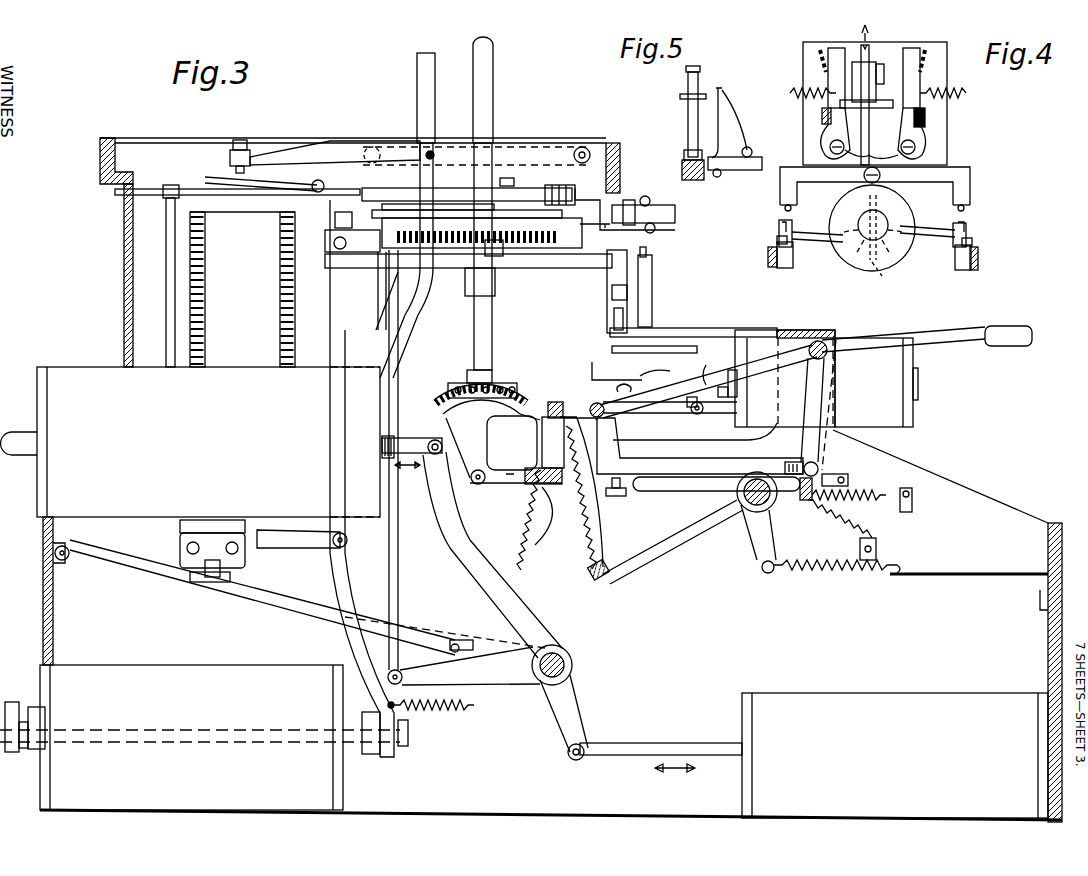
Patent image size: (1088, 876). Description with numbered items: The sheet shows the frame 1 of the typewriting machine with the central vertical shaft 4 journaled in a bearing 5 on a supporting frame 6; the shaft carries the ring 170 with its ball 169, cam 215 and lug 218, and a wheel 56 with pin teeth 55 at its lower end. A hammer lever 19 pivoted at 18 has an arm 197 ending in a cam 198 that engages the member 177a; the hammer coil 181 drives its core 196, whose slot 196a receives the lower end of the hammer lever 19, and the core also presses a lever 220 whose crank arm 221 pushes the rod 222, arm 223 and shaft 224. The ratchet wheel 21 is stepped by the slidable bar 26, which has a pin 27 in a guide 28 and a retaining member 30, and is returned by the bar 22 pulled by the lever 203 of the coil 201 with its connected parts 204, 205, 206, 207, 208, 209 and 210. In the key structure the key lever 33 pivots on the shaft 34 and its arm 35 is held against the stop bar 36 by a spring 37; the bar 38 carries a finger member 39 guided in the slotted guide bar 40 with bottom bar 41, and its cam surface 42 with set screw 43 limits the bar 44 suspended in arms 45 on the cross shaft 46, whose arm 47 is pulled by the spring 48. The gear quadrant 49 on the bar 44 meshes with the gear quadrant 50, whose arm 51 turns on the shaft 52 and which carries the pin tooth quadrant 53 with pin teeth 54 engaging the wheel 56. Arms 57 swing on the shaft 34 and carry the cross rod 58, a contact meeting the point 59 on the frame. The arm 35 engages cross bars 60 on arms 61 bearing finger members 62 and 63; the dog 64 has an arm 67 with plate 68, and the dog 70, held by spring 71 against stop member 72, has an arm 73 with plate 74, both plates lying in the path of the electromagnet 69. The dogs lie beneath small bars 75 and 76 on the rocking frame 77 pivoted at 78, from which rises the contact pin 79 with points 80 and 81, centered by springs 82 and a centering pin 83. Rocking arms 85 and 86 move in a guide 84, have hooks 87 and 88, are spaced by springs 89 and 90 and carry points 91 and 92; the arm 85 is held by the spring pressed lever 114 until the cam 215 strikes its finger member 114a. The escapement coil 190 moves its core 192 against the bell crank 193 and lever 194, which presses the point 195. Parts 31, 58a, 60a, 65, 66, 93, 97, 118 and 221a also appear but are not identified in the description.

In FIG. 3, the frame 1 is at (1006, 518).
In FIG. 3, the vertical shaft 4 is at (490, 332).
In FIG. 3, the bearing 5 is at (495, 288).
In FIG. 3, the supporting frame 6 is at (550, 272).
In FIG. 3, the pivotal point 18 is at (435, 148).
In FIG. 3, the hammer lever 19 is at (432, 102).
In FIG. 3, the ratchet wheel 21 is at (527, 255).
In FIG. 3, the bar 22 is at (372, 272).
In FIG. 3, the bar 26 is at (455, 255).
In FIG. 3, the projecting pin 27 is at (335, 218).
In FIG. 3, the orificed guide 28 is at (333, 243).
In FIG. 3, the V-shaped retaining member 30 is at (412, 262).
In FIG. 3, the rod 31 is at (403, 290).
In FIG. 3, the key lever 33 is at (938, 338).
In FIG. 3, the shaft 34 is at (822, 340).
In FIG. 3, the downwardly projecting arm 35 is at (822, 452).
In FIG. 3, the stop bar 36 is at (848, 478).
In FIG. 3, the spring 37 is at (870, 500).
In FIG. 3, the projecting bar 38 is at (712, 460).
In FIG. 3, the finger member 39 is at (566, 412).
In FIG. 3, the slotted guide bar 40 is at (556, 402).
In FIG. 3, the bottom bar 41 is at (535, 488).
In FIG. 3, the cam surface 42 is at (648, 490).
In FIG. 3, the set screw 43 is at (616, 497).
In FIG. 3, the bar 44 is at (604, 582).
In FIG. 3, the arms 45 is at (712, 518).
In FIG. 3, the cross shaft 46 is at (735, 490).
In FIG. 3, the projecting arm 47 is at (762, 552).
In FIG. 3, the pulling spring 48 is at (828, 573).
In FIG. 3, the gear quadrant 49 is at (580, 560).
In FIG. 3, the gear quadrant 50 is at (540, 545).
In FIG. 3, the arm 51 is at (500, 470).
In FIG. 3, the shaft 52 is at (477, 485).
In FIG. 3, the pin tooth quadrant 53 is at (493, 416).
In FIG. 3, the pin teeth 54 is at (528, 396).
In FIG. 3, the pin teeth 55 is at (438, 390).
In FIG. 3, the wheel 56 is at (465, 383).
In FIG. 3, the projecting arms 57 is at (762, 350).
In FIG. 3, the cross rod 58 is at (598, 404).
In FIG. 3, the hook 58a is at (622, 397).
In FIG. 3, the contact point 59 is at (659, 368).
In FIG. 3, the cross bars 60 is at (803, 493).
In FIG. 3, the spring 60a is at (868, 530).
In FIG. 3, the arms 61 is at (796, 463).
In FIG. 3, the finger member 62 is at (714, 415).
In FIG. 4, the finger member 62 is at (978, 262).
In FIG. 4, the finger member 63 is at (768, 250).
In FIG. 3, the dog 64 is at (692, 414).
In FIG. 4, the dog 64 is at (790, 222).
In FIG. 3, the block 65 is at (688, 402).
In FIG. 4, the block 65 is at (778, 236).
In FIG. 3, the bracket 66 is at (728, 372).
In FIG. 4, the bracket 66 is at (782, 220).
In FIG. 3, the arm 67 is at (708, 360).
In FIG. 4, the arm 67 is at (818, 234).
In FIG. 3, the plate 68 is at (730, 391).
In FIG. 4, the plate 68 is at (840, 258).
In FIG. 3, the electromagnet 69 is at (878, 338).
In FIG. 4, the electromagnet 69 is at (862, 268).
In FIG. 4, the dog 70 is at (962, 222).
In FIG. 4, the spring 71 is at (966, 228).
In FIG. 4, the stop member 72 is at (970, 246).
In FIG. 4, the projecting arm 73 is at (922, 236).
In FIG. 4, the plate 74 is at (886, 266).
In FIG. 3, the small bar 75 is at (680, 330).
In FIG. 4, the small bar 75 is at (780, 192).
In FIG. 4, the small bar 76 is at (967, 195).
In FIG. 3, the rocking frame 77 is at (612, 350).
In FIG. 4, the rocking frame 77 is at (955, 167).
In FIG. 3, the pivot 78 is at (625, 314).
In FIG. 4, the pivot 78 is at (880, 180).
In FIG. 4, the contact pin 79 is at (880, 62).
In FIG. 5, the contact pin 79 is at (688, 119).
In FIG. 4, the contact point 80 is at (868, 58).
In FIG. 5, the contact point 80 is at (686, 84).
In FIG. 4, the contact point 81 is at (877, 70).
In FIG. 3, the springs 82 is at (652, 294).
In FIG. 5, the springs 82 is at (725, 120).
In FIG. 3, the centering pin 83 is at (646, 252).
In FIG. 5, the centering pin 83 is at (716, 89).
In FIG. 3, the guide 84 is at (628, 292).
In FIG. 4, the guide 84 is at (822, 118).
In FIG. 3, the rocking arm 85 is at (624, 203).
In FIG. 4, the rocking arm 85 is at (830, 130).
In FIG. 4, the rocking arm 86 is at (925, 118).
In FIG. 4, the hook 87 is at (840, 160).
In FIG. 4, the hook 88 is at (878, 108).
In FIG. 4, the spring 89 is at (785, 93).
In FIG. 4, the spring 90 is at (960, 88).
In FIG. 4, the contact point 91 is at (858, 60).
In FIG. 4, the contact point 92 is at (910, 52).
In FIG. 4, the contact 93 is at (805, 55).
In FIG. 4, the plate 97 is at (900, 160).
In FIG. 3, the spring pressed lever 114 is at (652, 205).
In FIG. 3, the finger member 114a is at (600, 194).
In FIG. 3, the bracket 118 is at (640, 372).
In FIG. 3, the ball 169 is at (467, 187).
In FIG. 3, the ring 170 is at (466, 192).
In FIG. 3, the hook member 177a is at (203, 177).
In FIG. 3, the hammer coil 181 is at (226, 367).
In FIG. 3, the escapement coil 190 is at (850, 693).
In FIG. 3, the core 192 is at (628, 748).
In FIG. 3, the bell crank 193 is at (578, 712).
In FIG. 3, the lever 194 is at (300, 610).
In FIG. 3, the point 195 is at (215, 555).
In FIG. 3, the core 196 is at (410, 440).
In FIG. 3, the slot 196a is at (378, 440).
In FIG. 3, the arm 197 is at (290, 150).
In FIG. 3, the cam 198 is at (232, 160).
In FIG. 3, the coil 201 is at (178, 666).
In FIG. 3, the lever 203 is at (352, 600).
In FIG. 3, the connected part 204 is at (348, 541).
In FIG. 3, the connected part 205 is at (375, 755).
In FIG. 3, the connected part 206 is at (12, 702).
In FIG. 3, the connected part 207 is at (18, 755).
In FIG. 3, the connected part 208 is at (40, 719).
In FIG. 3, the connected part 209 is at (65, 726).
In FIG. 3, the connected part 210 is at (405, 748).
In FIG. 3, the cam 215 is at (566, 189).
In FIG. 3, the lug 218 is at (506, 178).
In FIG. 3, the lever 220 is at (484, 590).
In FIG. 3, the crank arm 221 is at (440, 710).
In FIG. 3, the link 221a is at (485, 680).
In FIG. 3, the rod 222 is at (399, 556).
In FIG. 3, the arm 223 is at (530, 150).
In FIG. 3, the shaft 224 is at (583, 142).